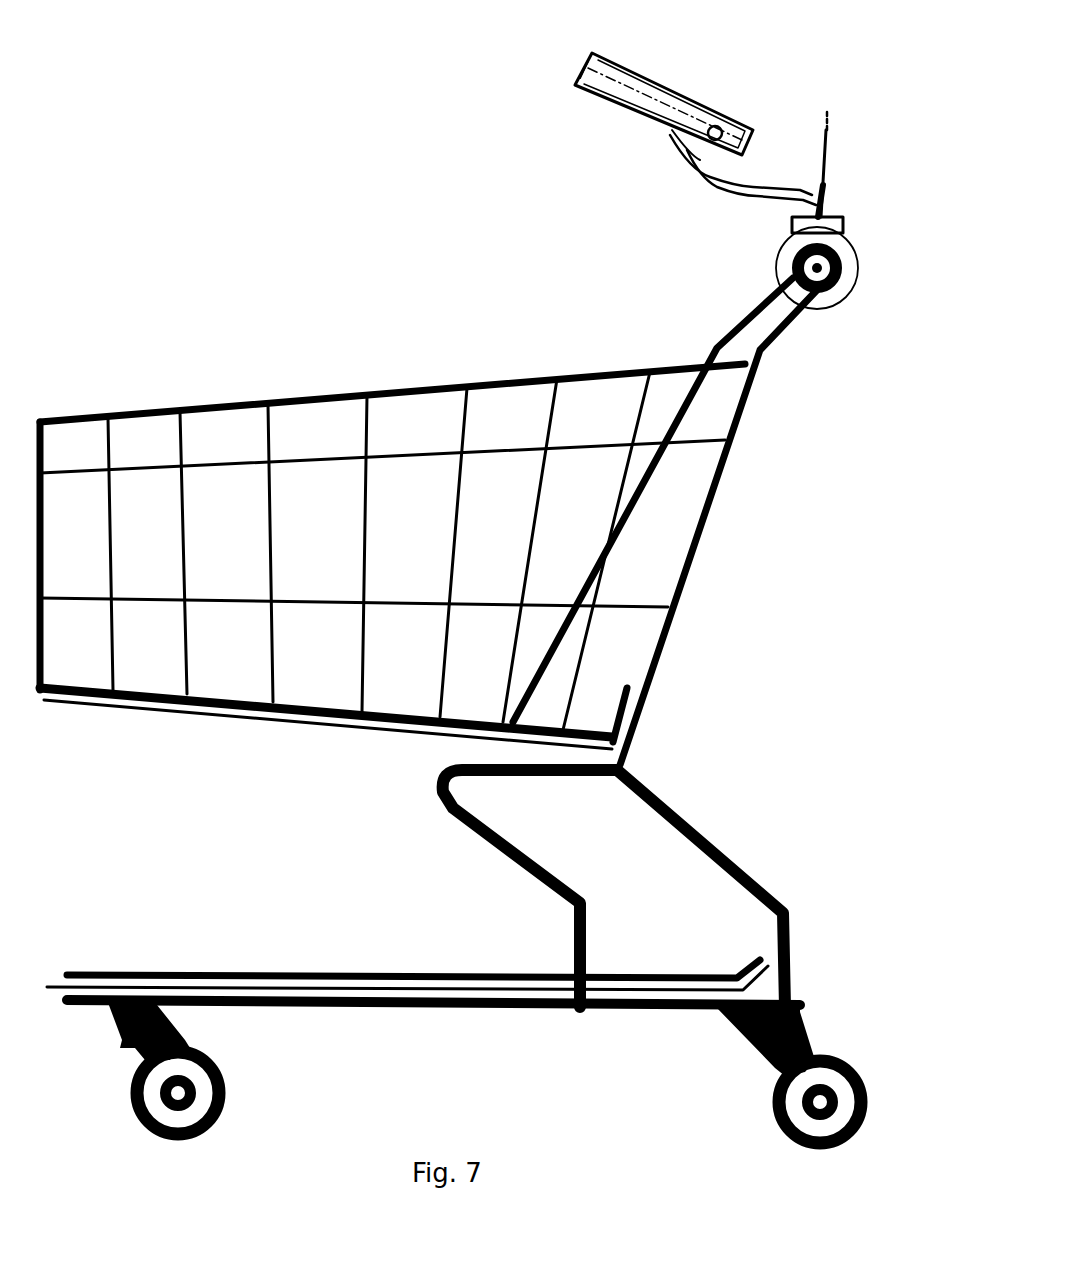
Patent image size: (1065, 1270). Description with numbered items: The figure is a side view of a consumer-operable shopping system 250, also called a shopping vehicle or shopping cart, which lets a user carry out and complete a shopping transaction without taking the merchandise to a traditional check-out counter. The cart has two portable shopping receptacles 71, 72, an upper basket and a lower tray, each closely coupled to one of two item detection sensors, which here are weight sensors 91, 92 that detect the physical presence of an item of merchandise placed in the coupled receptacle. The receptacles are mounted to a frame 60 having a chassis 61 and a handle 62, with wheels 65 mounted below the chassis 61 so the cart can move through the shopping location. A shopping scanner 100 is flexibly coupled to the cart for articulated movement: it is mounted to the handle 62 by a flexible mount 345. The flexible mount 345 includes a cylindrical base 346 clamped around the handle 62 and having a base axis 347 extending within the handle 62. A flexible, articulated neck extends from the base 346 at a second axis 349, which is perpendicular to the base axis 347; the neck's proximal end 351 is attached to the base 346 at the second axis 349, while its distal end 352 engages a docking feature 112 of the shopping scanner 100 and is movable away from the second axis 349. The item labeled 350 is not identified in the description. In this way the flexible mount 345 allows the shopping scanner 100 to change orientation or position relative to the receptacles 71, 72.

The consumer-operable shopping system 250 is at (122, 68).
The shopping scanner 100 is at (640, 92).
The docking feature 112 is at (673, 130).
The mounting arm 350 is at (733, 187).
The distal end 352 is at (690, 162).
The second axis 349 is at (835, 132).
The proximal end 351 is at (807, 200).
The flexible mount 345 is at (840, 222).
The cylindrical base 346 is at (793, 238).
The base axis 347 is at (793, 264).
The handle 62 is at (840, 293).
The portable shopping receptacle 71 is at (302, 392).
The frame 60 is at (640, 494).
The weight sensor 91 is at (289, 700).
The chassis 61 is at (527, 1007).
The portable shopping receptacle 72 is at (53, 985).
The weight sensor 92 is at (227, 973).
The wheels 65 is at (830, 1053).